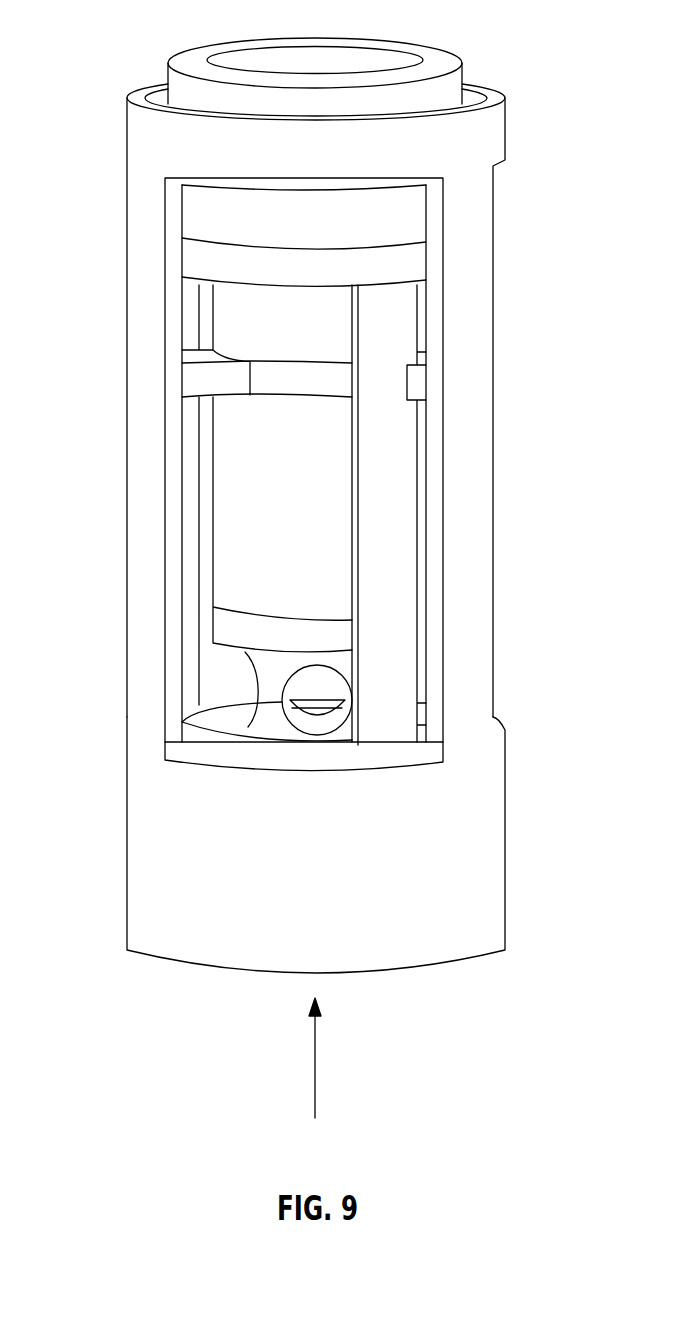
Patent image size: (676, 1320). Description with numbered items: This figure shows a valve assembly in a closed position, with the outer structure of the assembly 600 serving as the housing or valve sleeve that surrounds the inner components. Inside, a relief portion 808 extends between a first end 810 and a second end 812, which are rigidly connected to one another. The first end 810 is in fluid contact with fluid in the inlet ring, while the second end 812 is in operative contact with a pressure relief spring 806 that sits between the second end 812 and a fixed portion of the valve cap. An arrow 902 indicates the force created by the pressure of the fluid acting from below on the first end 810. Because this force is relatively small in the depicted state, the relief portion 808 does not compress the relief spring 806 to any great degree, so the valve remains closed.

The pressure relief spring 806 is at (296, 213).
The second end 812 is at (207, 260).
The relief portion 808 is at (395, 563).
The first end 810 is at (243, 748).
The assembly 600 is at (135, 897).
The arrow 902 is at (315, 1057).